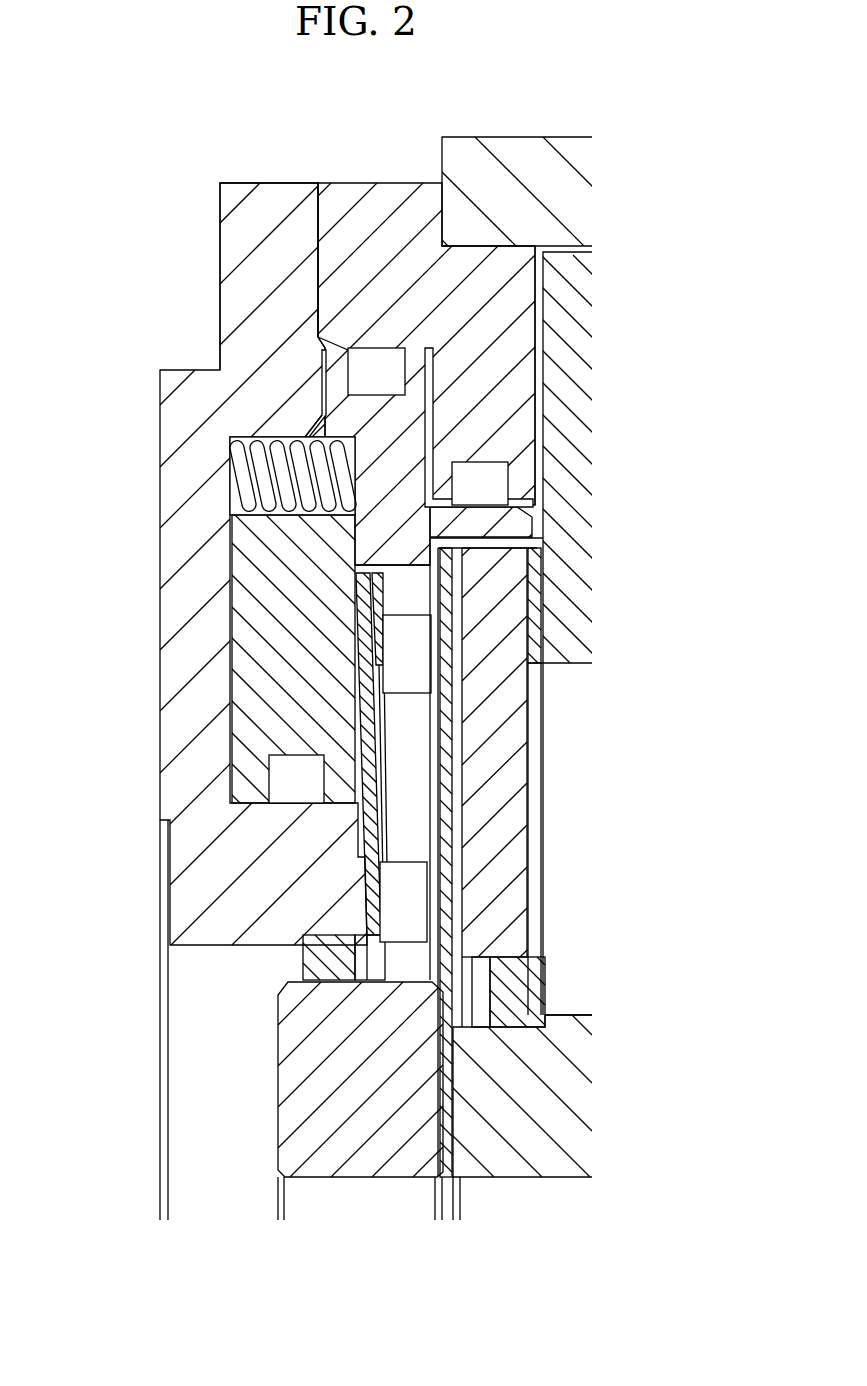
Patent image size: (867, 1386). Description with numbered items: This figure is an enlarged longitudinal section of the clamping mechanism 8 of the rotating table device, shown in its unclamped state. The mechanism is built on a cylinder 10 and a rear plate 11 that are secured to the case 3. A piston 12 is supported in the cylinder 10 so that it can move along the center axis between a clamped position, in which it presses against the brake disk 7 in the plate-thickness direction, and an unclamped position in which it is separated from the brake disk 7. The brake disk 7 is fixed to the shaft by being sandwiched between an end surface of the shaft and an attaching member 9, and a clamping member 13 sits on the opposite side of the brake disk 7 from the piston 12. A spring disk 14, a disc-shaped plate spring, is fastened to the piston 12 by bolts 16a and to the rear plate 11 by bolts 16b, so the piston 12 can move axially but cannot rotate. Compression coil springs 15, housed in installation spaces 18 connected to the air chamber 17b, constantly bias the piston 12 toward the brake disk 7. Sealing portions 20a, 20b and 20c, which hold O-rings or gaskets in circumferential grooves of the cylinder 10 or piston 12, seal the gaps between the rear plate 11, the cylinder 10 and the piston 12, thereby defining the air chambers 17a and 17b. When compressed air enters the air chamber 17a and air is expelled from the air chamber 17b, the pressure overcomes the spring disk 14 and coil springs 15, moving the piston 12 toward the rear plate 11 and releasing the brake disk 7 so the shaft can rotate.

The case 3 is at (524, 156).
The brake disk 7 is at (448, 923).
The clamping mechanism 8 is at (150, 382).
The attaching member 9 is at (293, 1069).
The cylinder 10 is at (372, 190).
The rear plate 11 is at (276, 193).
The piston 12 is at (248, 605).
The clamping member 13 is at (520, 792).
The spring disk 14 is at (365, 713).
The coil springs 15 is at (248, 481).
The bolts 16a is at (410, 668).
The bolts 16b is at (418, 883).
The air chamber 17a is at (428, 436).
The air chamber 17b is at (327, 351).
The installation spaces 18 is at (305, 420).
The sealing portion 20a is at (380, 370).
The sealing portion 20b is at (285, 774).
The sealing portion 20c is at (485, 480).